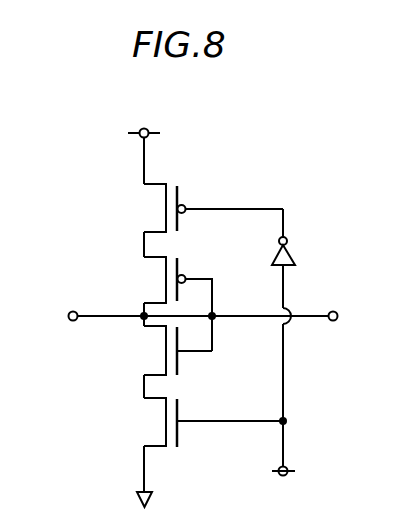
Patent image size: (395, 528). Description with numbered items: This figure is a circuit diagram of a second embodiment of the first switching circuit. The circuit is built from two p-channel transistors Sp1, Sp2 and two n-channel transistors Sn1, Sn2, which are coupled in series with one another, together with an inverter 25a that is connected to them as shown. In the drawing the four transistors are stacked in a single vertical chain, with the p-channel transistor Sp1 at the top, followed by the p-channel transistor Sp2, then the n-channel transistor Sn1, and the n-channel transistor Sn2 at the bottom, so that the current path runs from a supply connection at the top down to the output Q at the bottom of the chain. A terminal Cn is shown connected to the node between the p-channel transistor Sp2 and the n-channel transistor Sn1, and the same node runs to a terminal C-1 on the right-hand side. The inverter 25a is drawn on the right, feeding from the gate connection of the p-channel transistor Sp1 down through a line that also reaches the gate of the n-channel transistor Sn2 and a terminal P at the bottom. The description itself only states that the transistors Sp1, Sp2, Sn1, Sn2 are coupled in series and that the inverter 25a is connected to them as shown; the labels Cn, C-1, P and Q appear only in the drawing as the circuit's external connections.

The p-channel transistor Sp1 is at (163, 204).
The p-channel transistor Sp2 is at (162, 275).
The n-channel transistor Sn1 is at (162, 348).
The n-channel transistor Sn2 is at (163, 418).
The inverter 25a is at (288, 239).
The carry input terminal Cn is at (92, 316).
The carry output terminal C-1 is at (246, 303).
The propagate input terminal P is at (293, 449).
The output terminal Q is at (153, 503).